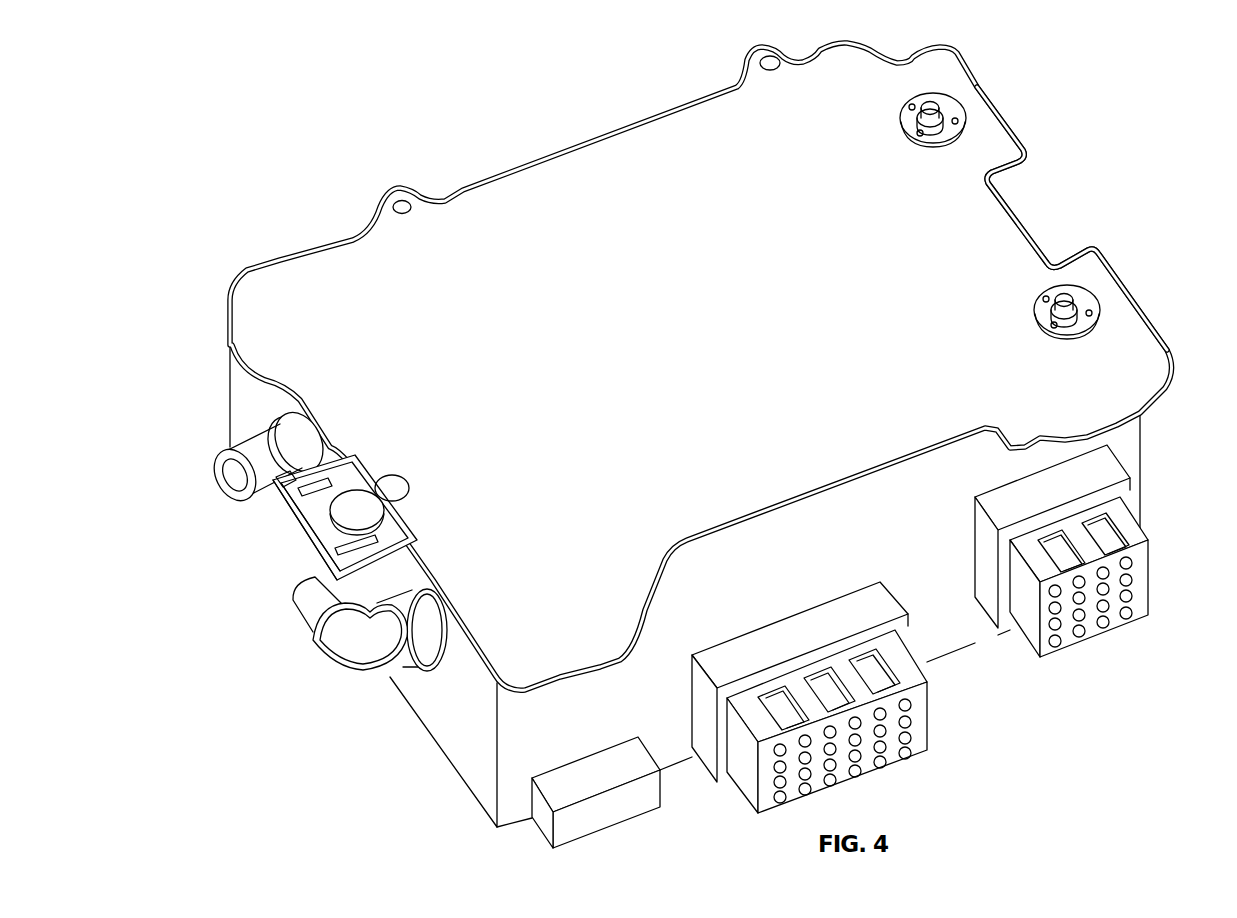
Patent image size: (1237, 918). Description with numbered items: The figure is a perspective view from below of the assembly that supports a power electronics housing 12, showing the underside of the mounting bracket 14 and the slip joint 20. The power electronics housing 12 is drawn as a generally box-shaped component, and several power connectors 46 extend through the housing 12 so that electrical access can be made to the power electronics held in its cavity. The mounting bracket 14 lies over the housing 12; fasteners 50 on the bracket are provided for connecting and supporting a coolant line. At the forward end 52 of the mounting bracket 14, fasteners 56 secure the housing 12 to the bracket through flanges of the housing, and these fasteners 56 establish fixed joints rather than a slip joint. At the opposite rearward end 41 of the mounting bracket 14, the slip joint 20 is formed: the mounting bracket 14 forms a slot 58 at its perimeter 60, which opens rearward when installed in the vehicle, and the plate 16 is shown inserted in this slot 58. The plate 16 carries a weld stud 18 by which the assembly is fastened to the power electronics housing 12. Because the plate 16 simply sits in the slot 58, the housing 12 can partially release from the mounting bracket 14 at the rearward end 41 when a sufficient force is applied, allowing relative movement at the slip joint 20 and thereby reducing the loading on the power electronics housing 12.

The slip joint 20 is at (241, 138).
The power electronics housing 12 is at (1125, 447).
The mounting bracket 14 is at (305, 275).
The plate 16 is at (323, 533).
The weld stud 18 is at (362, 505).
The rearward end 41 is at (240, 358).
The power connectors 46 is at (648, 797).
The fasteners 50 is at (397, 193).
The forward end 52 is at (1020, 130).
The fasteners 56 is at (950, 113).
The slot 58 is at (282, 513).
The perimeter 60 is at (485, 667).